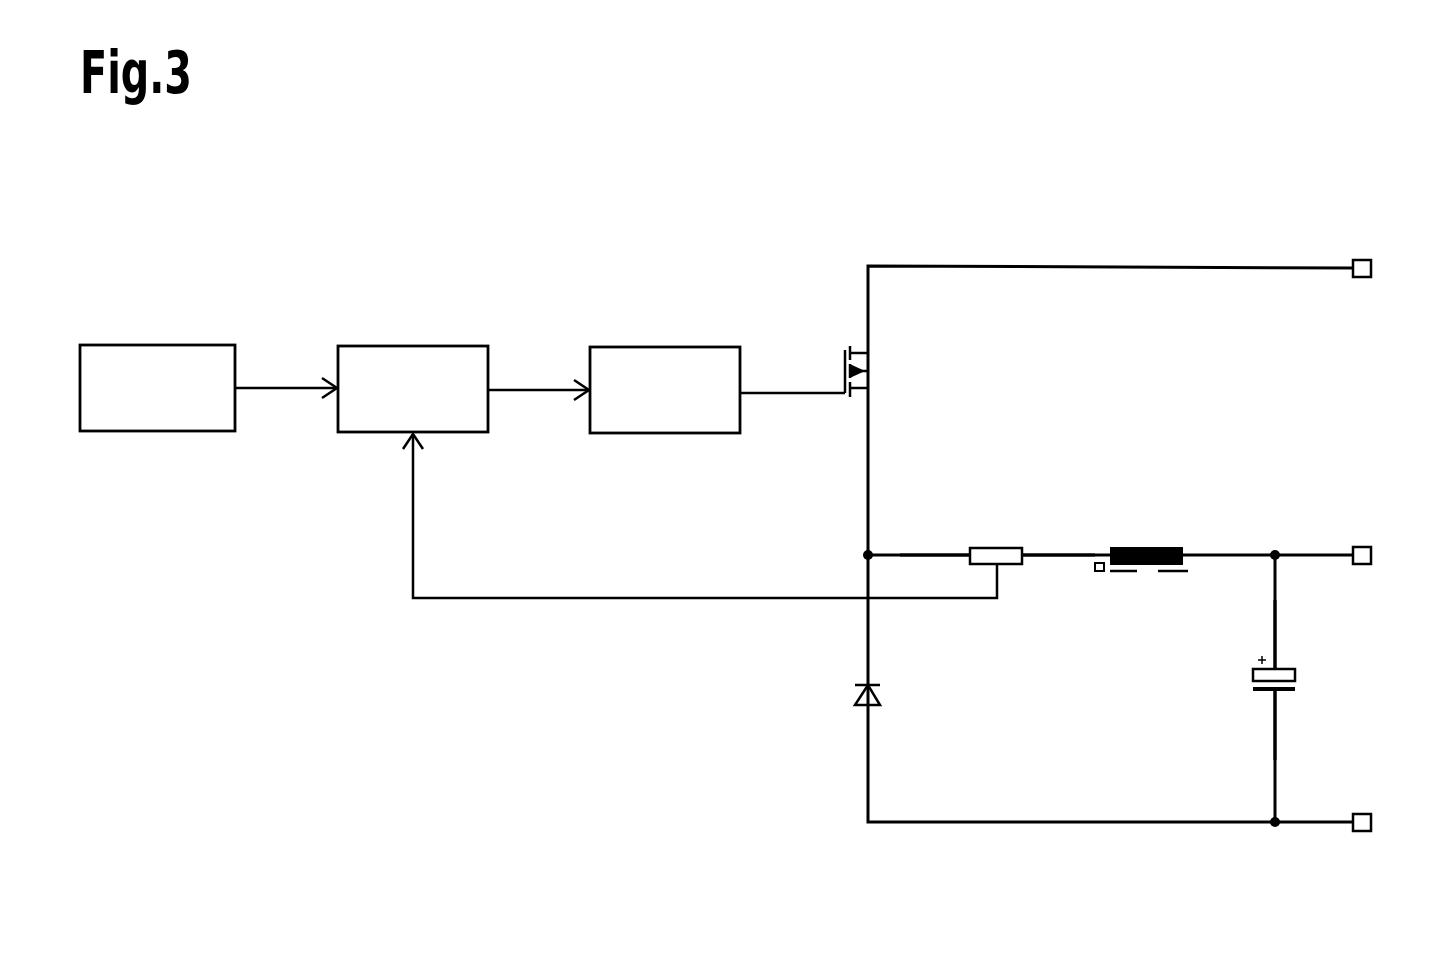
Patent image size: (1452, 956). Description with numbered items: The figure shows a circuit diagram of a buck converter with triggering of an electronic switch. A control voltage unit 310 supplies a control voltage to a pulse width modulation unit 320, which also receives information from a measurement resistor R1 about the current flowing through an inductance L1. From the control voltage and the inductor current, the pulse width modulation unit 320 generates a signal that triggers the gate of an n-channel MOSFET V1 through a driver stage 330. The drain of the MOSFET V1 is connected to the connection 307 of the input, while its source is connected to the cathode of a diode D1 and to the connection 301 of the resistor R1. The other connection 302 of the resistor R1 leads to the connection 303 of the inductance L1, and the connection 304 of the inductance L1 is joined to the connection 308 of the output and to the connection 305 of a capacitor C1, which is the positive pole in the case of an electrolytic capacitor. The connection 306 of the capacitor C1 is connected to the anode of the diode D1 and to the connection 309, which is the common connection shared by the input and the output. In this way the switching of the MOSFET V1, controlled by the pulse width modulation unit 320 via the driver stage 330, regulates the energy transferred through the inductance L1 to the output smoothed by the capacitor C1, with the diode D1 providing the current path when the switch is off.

The control voltage unit 310 is at (157, 388).
The pulse width modulation unit 320 is at (413, 389).
The driver stage 330 is at (665, 390).
The connection of the measurement resistor 301 is at (936, 539).
The connection of the measurement resistor 302 is at (1058, 539).
The connection of the inductance 303 is at (1101, 583).
The connection of the inductance 304 is at (1190, 587).
The connection of the capacitor 305 is at (1306, 634).
The connection of the capacitor 306 is at (1242, 724).
The connection of the input 307 is at (1394, 274).
The connection of the output 308 is at (1394, 558).
The common connection 309 is at (1394, 824).
The MOSFET V1 is at (883, 371).
The measurement resistor R1 is at (996, 535).
The inductance L1 is at (1146, 535).
The capacitor C1 is at (1298, 683).
The diode D1 is at (890, 696).